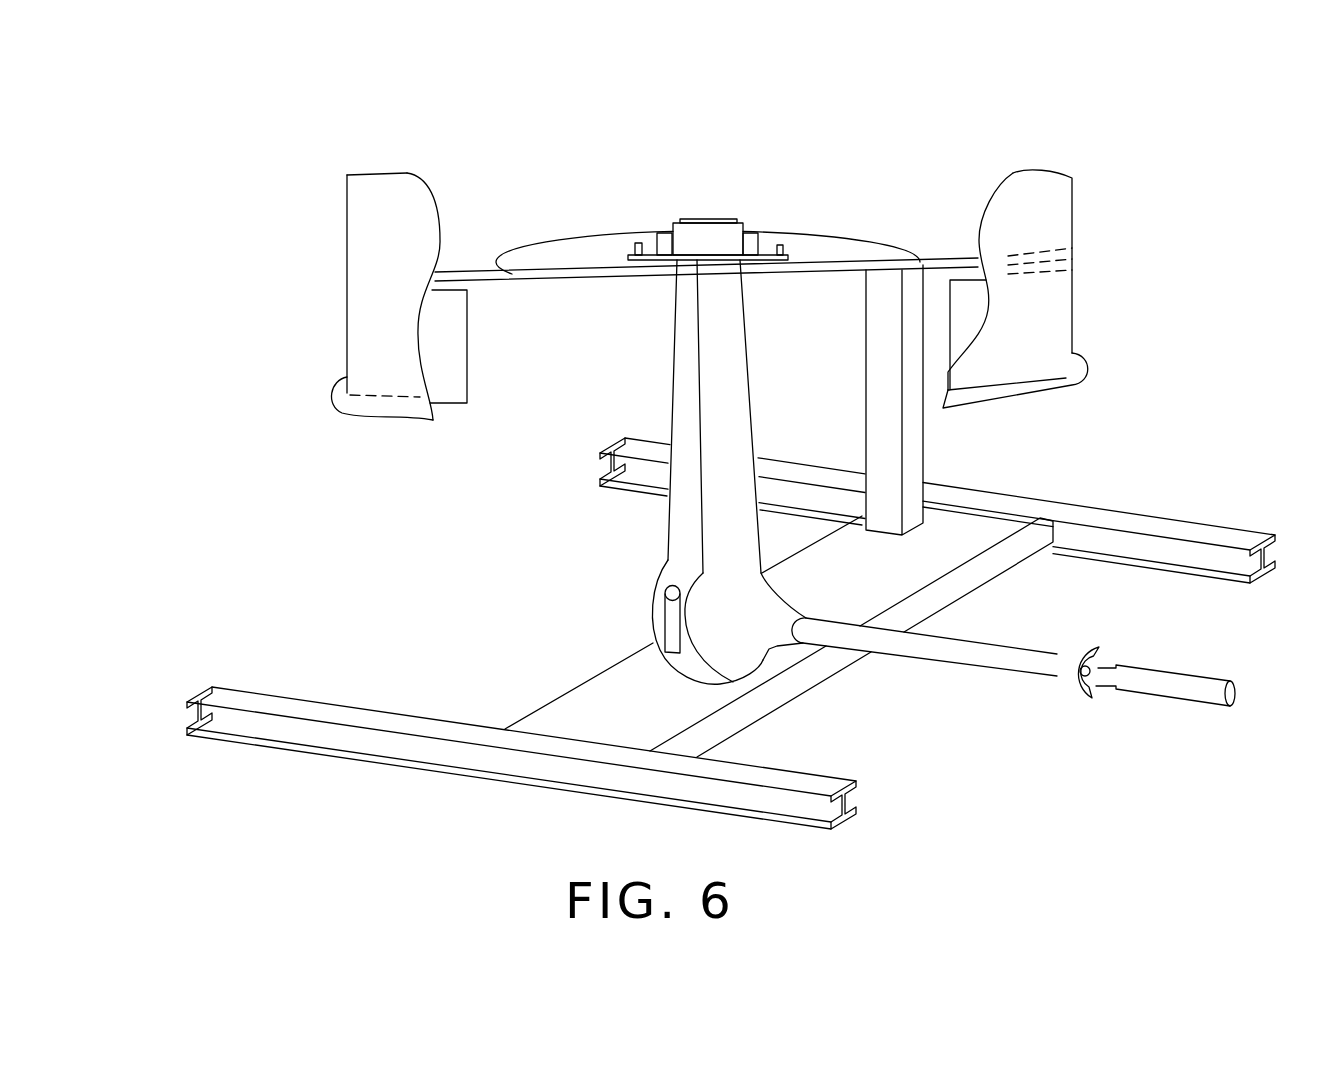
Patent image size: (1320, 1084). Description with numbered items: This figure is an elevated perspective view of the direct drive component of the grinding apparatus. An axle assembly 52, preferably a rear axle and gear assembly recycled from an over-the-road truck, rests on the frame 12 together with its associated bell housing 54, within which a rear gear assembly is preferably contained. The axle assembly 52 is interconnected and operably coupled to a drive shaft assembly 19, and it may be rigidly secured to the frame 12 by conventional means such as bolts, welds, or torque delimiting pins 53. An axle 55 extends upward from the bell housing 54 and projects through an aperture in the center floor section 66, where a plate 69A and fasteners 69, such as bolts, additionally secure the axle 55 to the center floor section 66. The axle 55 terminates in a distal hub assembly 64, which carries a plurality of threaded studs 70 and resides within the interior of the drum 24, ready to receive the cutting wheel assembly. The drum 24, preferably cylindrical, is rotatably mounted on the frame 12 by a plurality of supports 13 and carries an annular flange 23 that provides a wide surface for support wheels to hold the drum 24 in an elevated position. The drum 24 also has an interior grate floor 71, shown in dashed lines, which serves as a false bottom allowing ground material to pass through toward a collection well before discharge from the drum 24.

The frame 12 is at (1115, 508).
The supports 13 is at (924, 455).
The drive shaft assembly 19 is at (990, 670).
The annular flange 23 is at (340, 383).
The drum 24 is at (1072, 207).
The axle assembly 52 is at (673, 395).
The torque delimiting pins 53 is at (662, 613).
The bell housing 54 is at (762, 665).
The axle 55 is at (667, 535).
The hub assembly 64 is at (737, 223).
The center floor section 66 is at (570, 238).
The fasteners 69 is at (781, 245).
The plate 69A is at (790, 255).
The threaded studs 70 is at (758, 235).
The grate floor 71 is at (1073, 255).